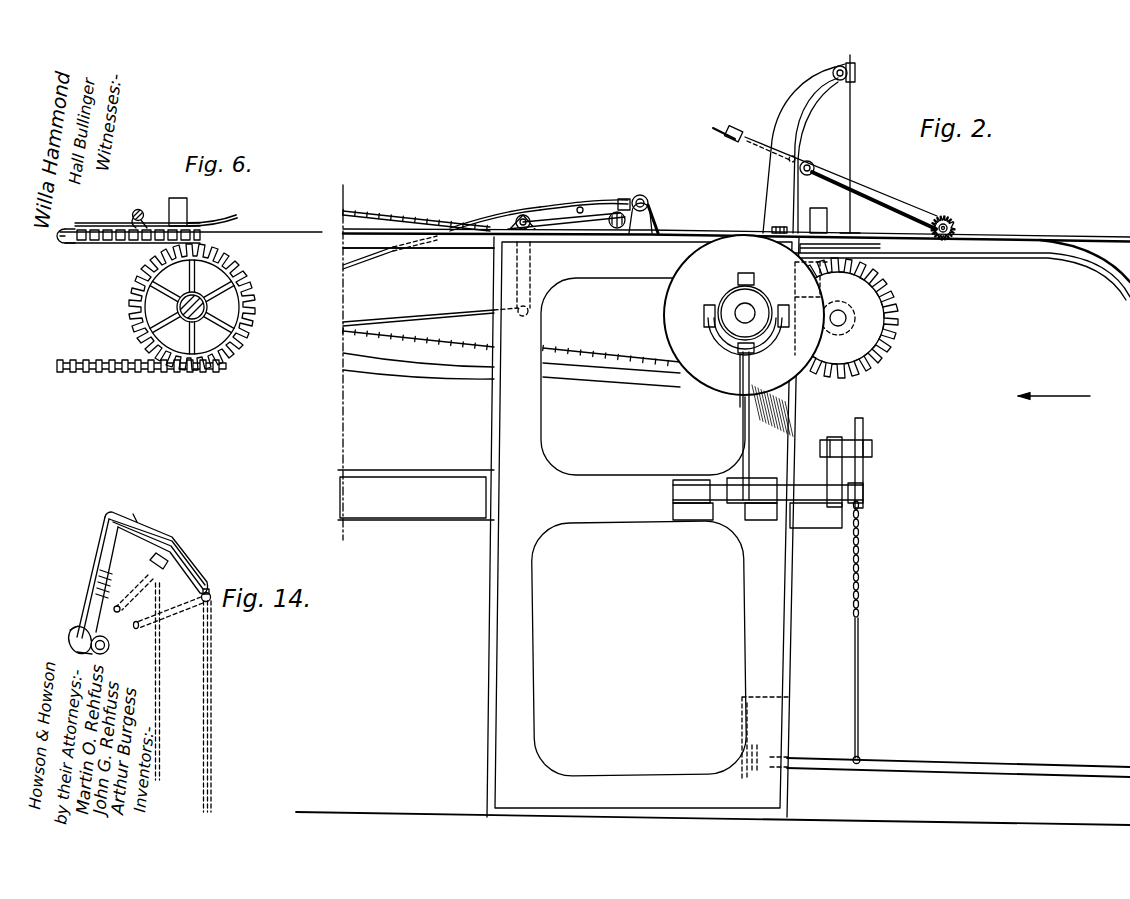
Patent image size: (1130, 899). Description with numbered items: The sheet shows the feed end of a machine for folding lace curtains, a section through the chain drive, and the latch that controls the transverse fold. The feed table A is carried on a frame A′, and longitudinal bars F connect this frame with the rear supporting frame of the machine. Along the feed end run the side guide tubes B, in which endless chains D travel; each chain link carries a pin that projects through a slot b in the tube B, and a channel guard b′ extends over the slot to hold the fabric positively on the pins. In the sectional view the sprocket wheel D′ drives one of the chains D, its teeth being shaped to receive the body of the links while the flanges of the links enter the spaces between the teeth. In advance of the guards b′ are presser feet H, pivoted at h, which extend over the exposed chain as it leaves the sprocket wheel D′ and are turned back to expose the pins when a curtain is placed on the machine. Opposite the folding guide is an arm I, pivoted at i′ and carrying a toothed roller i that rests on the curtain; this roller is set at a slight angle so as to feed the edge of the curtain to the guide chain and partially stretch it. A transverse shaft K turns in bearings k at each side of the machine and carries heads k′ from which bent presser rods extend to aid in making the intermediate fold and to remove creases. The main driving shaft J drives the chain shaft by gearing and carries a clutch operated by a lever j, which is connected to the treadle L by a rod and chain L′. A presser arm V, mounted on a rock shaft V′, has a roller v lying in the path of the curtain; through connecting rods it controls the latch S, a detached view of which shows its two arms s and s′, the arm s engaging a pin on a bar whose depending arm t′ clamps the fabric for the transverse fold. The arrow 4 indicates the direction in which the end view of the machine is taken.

In FIG. 6, the channel guard b′ is at (107, 230).
In FIG. 2, the channel guard b′ is at (412, 232).
In FIG. 6, the slot b is at (63, 230).
In FIG. 6, the side guide tube B is at (64, 242).
In FIG. 2, the side guide tube B is at (430, 244).
In FIG. 6, the pivot h is at (137, 210).
In FIG. 6, the presser foot H is at (193, 227).
In FIG. 2, the presser foot H is at (851, 233).
In FIG. 6, the sprocket wheel D′ is at (132, 306).
In FIG. 2, the sprocket wheel D′ is at (897, 318).
In FIG. 6, the endless chain D is at (103, 373).
In FIG. 2, the endless chain D is at (866, 379).
In FIG. 14, the latch S is at (138, 584).
In FIG. 14, the latch arm s′ is at (140, 520).
In FIG. 14, the latch arm s is at (160, 540).
In FIG. 14, the depending arm t′ is at (209, 700).
In FIG. 2, the feed table A is at (960, 272).
In FIG. 2, the frame A′ is at (639, 649).
In FIG. 2, the longitudinal bar F is at (416, 495).
In FIG. 2, the rock shaft V′ is at (522, 292).
In FIG. 2, the presser arm V is at (569, 224).
In FIG. 2, the roller v is at (615, 231).
In FIG. 2, the transverse shaft K is at (640, 195).
In FIG. 2, the head k′ is at (624, 200).
In FIG. 2, the bearing k is at (656, 212).
In FIG. 2, the pivot i′ is at (810, 162).
In FIG. 2, the arm I is at (872, 199).
In FIG. 2, the toothed roller i is at (950, 220).
In FIG. 2, the main driving shaft J is at (742, 313).
In FIG. 2, the lever j is at (745, 445).
In FIG. 2, the rod and chain L′ is at (858, 678).
In FIG. 2, the treadle L is at (1012, 765).
In FIG. 2, the arrow 4 is at (1064, 396).